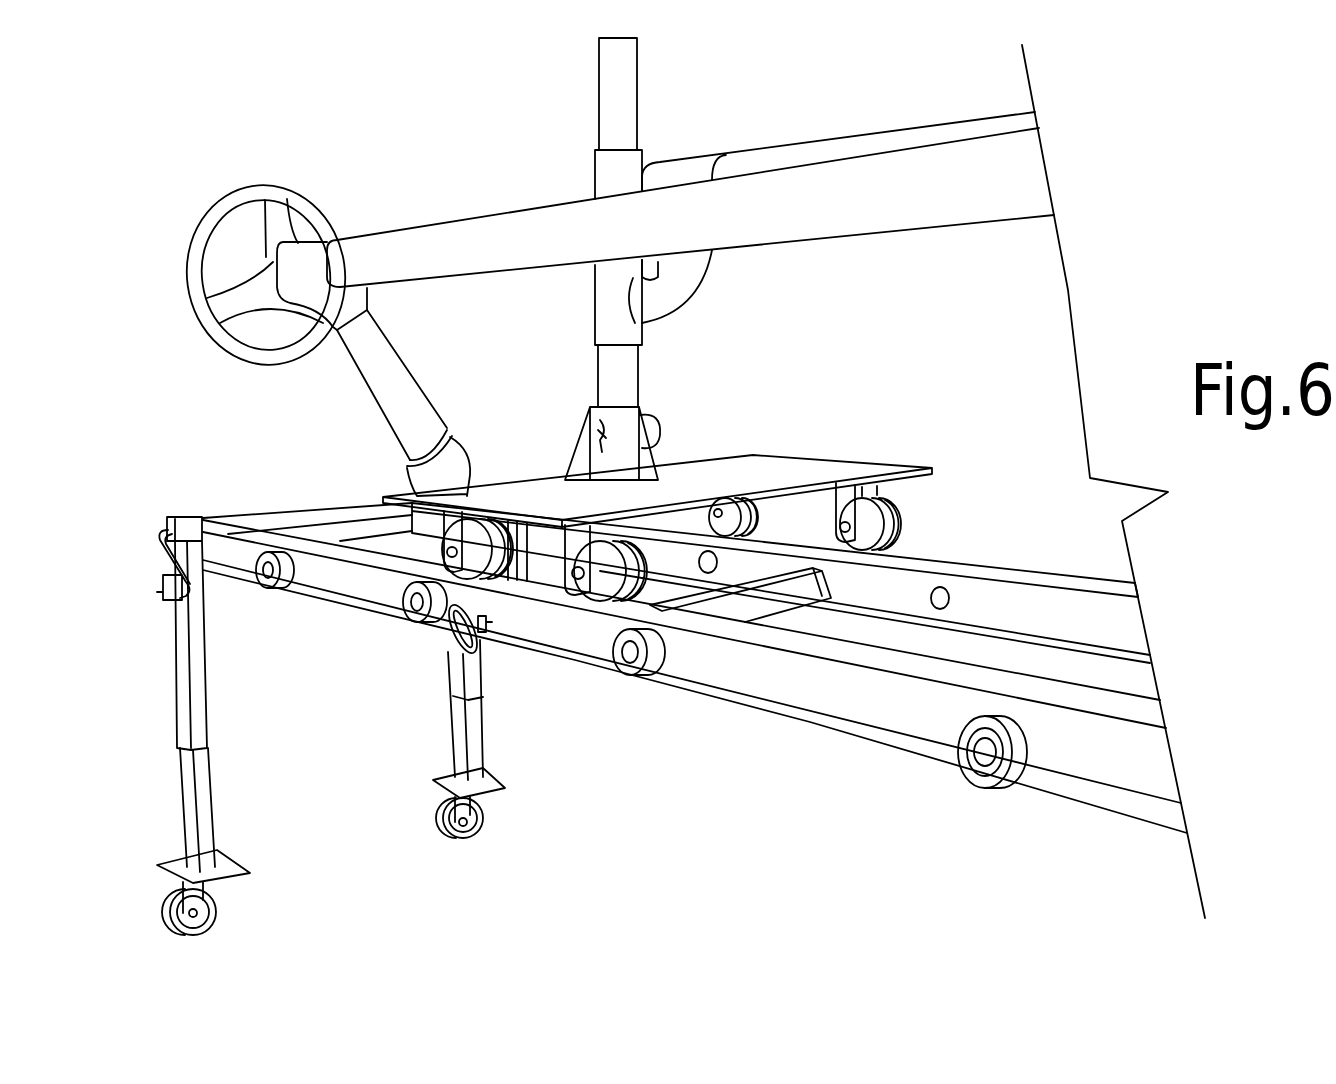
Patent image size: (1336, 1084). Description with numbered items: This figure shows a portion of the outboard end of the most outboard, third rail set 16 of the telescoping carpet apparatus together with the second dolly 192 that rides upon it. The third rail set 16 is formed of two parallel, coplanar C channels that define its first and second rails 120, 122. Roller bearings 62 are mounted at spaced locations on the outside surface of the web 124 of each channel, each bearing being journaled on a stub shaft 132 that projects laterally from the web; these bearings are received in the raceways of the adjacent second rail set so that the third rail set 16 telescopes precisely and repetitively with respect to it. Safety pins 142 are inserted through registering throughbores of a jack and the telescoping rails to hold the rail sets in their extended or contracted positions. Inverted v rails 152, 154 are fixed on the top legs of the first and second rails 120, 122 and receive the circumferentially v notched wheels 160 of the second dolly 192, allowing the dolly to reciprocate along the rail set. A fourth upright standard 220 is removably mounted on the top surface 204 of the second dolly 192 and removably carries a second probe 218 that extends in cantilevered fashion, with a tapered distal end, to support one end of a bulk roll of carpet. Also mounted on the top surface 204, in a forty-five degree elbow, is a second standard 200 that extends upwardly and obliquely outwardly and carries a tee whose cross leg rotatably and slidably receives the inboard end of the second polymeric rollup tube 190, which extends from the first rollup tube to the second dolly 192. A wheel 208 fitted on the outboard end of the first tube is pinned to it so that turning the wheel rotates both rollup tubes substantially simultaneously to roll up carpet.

The third rail set 16 is at (672, 711).
The roller bearing 62 is at (669, 709).
The first rail 120 is at (808, 738).
The second rail 122 is at (925, 556).
The web 124 is at (920, 710).
The stub shaft 132 is at (990, 754).
The safety pin 142 is at (497, 623).
The inverted v rail 152 is at (690, 617).
The inverted v rail 154 is at (1012, 568).
The v notched wheel 160 is at (585, 598).
The second polymeric rollup tube 190 is at (458, 247).
The second dolly 192 is at (657, 532).
The second standard 200 is at (344, 412).
The top surface 204 is at (826, 470).
The wheel 208 is at (223, 207).
The second probe 218 is at (815, 140).
The fourth upright standard 220 is at (565, 164).